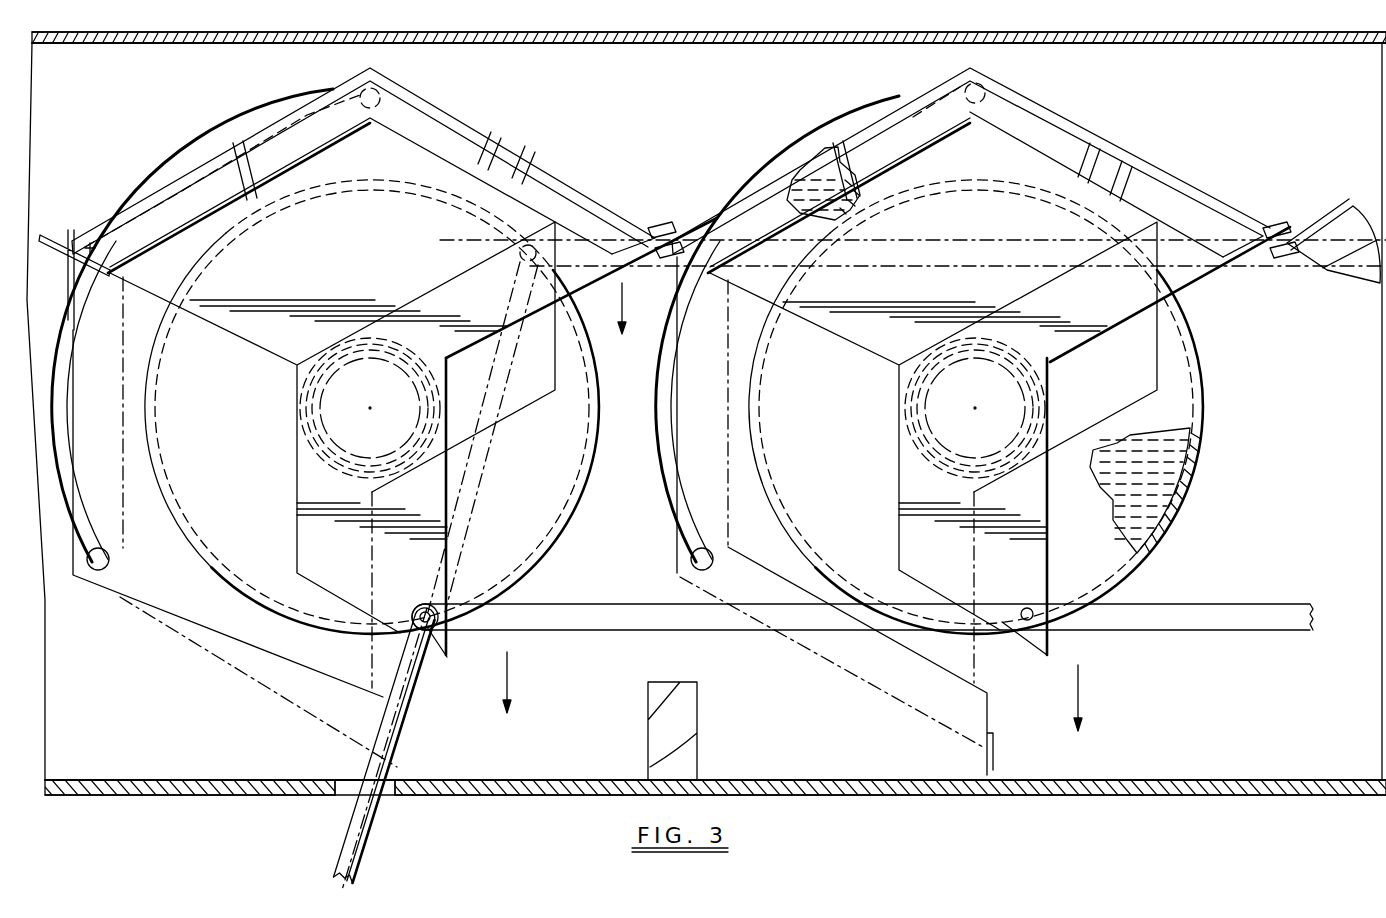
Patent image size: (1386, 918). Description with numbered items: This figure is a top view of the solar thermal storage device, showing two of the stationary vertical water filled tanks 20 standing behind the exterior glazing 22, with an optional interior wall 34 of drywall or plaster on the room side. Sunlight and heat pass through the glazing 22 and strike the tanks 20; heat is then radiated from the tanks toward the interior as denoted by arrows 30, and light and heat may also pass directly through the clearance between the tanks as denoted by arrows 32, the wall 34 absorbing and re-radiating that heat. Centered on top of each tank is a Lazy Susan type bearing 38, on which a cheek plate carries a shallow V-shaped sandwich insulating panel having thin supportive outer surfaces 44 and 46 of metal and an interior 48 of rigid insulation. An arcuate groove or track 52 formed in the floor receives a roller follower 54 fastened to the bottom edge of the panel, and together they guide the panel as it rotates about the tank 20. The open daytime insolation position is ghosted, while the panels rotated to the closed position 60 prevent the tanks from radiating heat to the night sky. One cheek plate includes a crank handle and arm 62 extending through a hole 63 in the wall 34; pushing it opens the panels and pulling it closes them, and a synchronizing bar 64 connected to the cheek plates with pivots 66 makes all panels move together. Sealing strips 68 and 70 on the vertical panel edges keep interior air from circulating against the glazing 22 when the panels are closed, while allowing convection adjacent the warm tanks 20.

The water filled tanks 20 is at (577, 505).
The glazing 22 is at (680, 42).
The arrows 30 is at (812, 691).
The arrows 32 is at (621, 323).
The wall 34 is at (1202, 784).
The bearing 38 is at (333, 458).
The outer surface 44 is at (790, 172).
The outer surface 46 is at (938, 140).
The interior 48 is at (815, 170).
The arcuate track 52 is at (277, 107).
The roller follower 54 is at (383, 80).
The position 60 is at (570, 177).
The crank handle and arm 62 is at (402, 705).
The hole 63 is at (393, 797).
The synchronizing bar 64 is at (1253, 270).
The pivots 66 is at (430, 640).
The sealing strip 68 is at (660, 227).
The sealing strip 70 is at (57, 253).